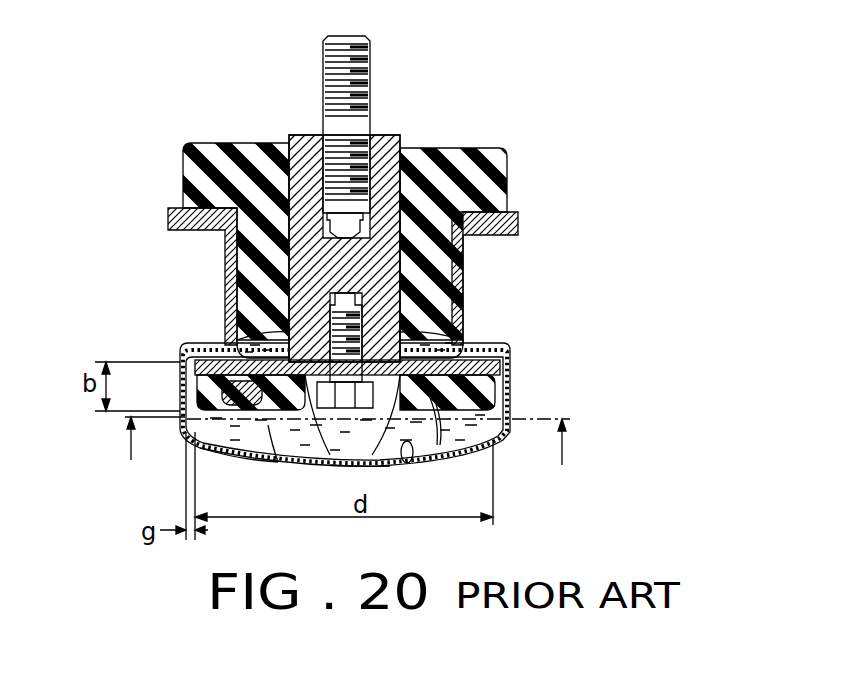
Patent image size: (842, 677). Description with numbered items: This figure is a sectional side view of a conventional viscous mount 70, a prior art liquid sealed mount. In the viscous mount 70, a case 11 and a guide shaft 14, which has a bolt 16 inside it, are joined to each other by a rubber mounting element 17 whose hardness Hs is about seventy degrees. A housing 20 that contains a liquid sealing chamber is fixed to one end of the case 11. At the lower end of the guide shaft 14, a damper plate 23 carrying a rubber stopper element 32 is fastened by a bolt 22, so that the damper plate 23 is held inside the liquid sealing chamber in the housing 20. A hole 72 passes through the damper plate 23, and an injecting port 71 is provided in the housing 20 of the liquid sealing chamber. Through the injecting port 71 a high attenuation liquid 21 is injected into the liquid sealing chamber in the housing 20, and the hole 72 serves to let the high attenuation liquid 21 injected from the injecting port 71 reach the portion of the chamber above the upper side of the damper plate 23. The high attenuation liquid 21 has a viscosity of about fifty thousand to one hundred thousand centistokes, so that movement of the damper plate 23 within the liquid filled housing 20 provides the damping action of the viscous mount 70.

The viscous mount 70 is at (581, 86).
The bolt 16 is at (322, 64).
The guide shaft 14 is at (393, 135).
The rubber mounting element 17 is at (497, 150).
The case 11 is at (463, 268).
The rubber stopper element 32 is at (468, 340).
The housing 20 is at (510, 390).
The high attenuation liquid 21 is at (317, 437).
The bolt 22 is at (278, 445).
The damper plate 23 is at (374, 437).
The injecting port 71 is at (412, 464).
The hole 72 is at (440, 422).